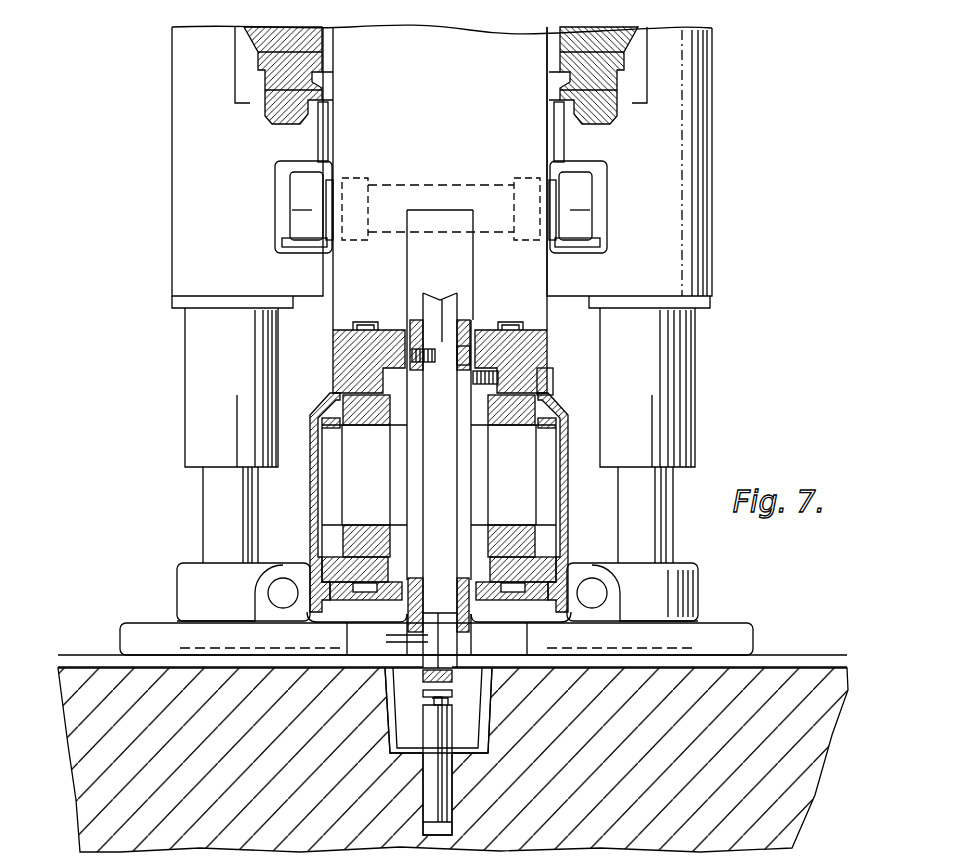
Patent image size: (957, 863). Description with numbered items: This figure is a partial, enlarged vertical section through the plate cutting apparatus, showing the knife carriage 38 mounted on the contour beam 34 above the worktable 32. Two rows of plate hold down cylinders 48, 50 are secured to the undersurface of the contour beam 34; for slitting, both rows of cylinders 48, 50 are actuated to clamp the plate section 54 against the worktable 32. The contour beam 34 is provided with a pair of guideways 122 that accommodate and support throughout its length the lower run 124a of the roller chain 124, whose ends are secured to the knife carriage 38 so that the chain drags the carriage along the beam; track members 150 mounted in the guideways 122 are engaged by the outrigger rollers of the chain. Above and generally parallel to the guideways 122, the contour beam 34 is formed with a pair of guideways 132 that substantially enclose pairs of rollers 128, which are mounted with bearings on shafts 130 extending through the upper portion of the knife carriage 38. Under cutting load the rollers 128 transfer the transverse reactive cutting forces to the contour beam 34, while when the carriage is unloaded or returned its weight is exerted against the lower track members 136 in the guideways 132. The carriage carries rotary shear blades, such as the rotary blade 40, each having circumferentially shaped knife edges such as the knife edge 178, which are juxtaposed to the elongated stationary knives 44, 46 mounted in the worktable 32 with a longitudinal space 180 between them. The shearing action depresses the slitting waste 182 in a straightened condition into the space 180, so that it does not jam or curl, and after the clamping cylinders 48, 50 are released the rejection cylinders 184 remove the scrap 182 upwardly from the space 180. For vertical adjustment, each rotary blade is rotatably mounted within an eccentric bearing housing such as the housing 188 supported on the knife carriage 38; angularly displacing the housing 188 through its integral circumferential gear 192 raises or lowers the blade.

The worktable 32 is at (88, 777).
The contour beam 34 is at (708, 190).
The knife carriage 38 is at (549, 359).
The rotary blade 40 is at (446, 595).
The stationary knife 44 is at (400, 715).
The stationary knife 46 is at (472, 738).
The plate hold down cylinder 48 is at (675, 407).
The plate hold down cylinder 50 is at (193, 413).
The plate section 54 is at (792, 657).
The guideway 122 is at (605, 192).
The roller chain 124 is at (592, 222).
The lower run 124a is at (350, 176).
The roller 128 is at (326, 80).
The shaft 130 is at (443, 31).
The guideway 132 is at (245, 100).
The lower track member 136 is at (328, 98).
The track member 150 is at (597, 248).
The circumferential knife edge 178 is at (387, 640).
The longitudinal space 180 is at (452, 700).
The slitting waste 182 is at (452, 676).
The rejection cylinder 184 is at (433, 778).
The eccentric bearing housing 188 is at (344, 335).
The circumferential gear 192 is at (370, 322).